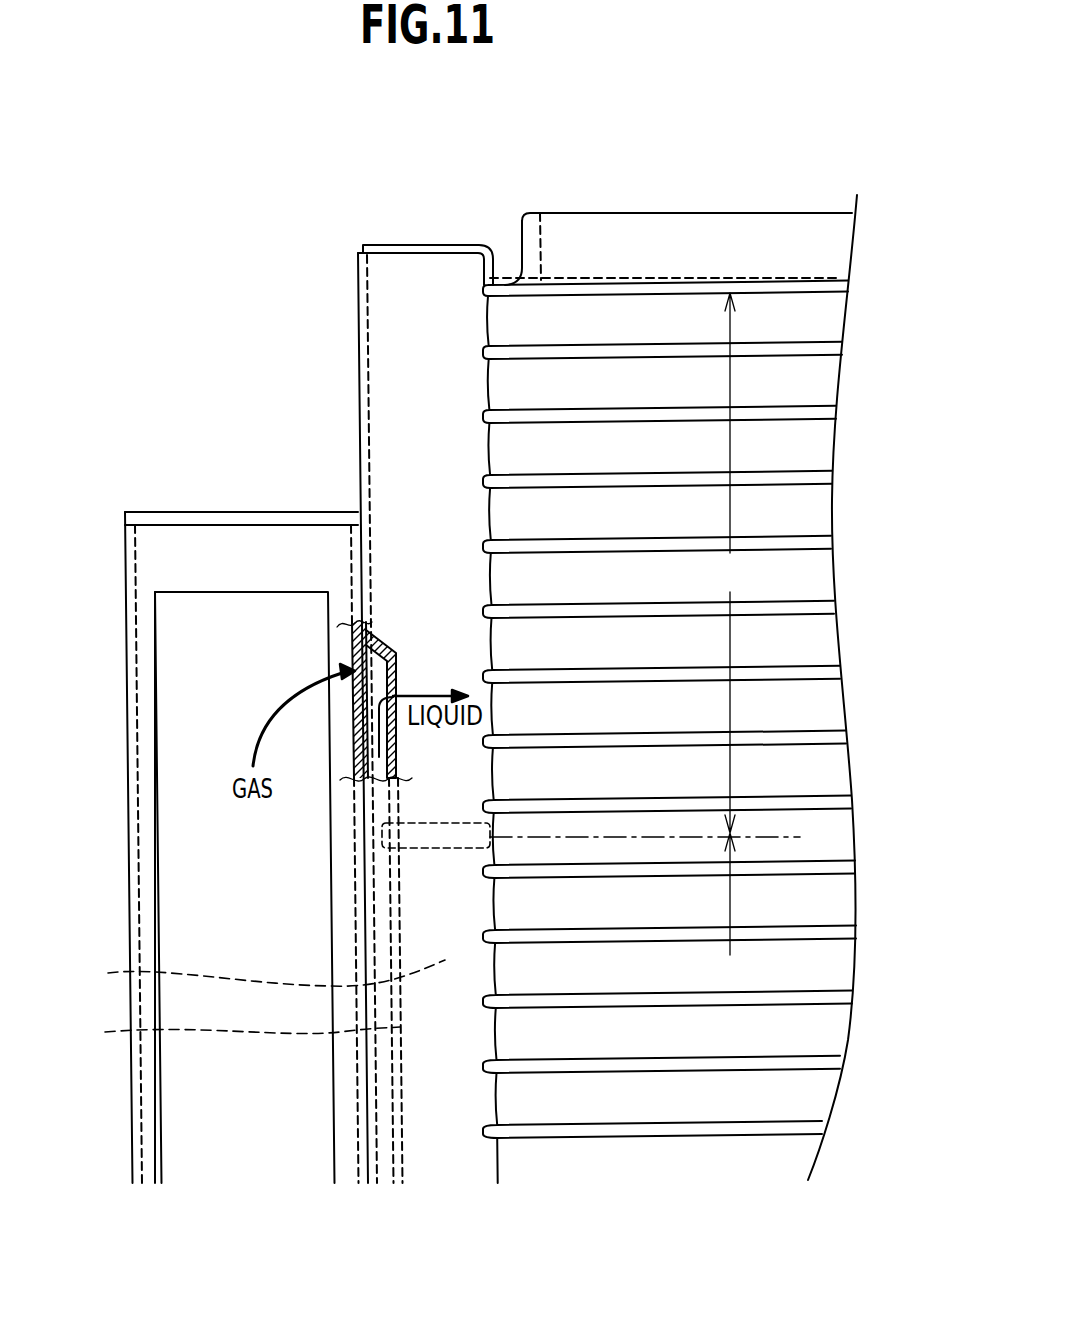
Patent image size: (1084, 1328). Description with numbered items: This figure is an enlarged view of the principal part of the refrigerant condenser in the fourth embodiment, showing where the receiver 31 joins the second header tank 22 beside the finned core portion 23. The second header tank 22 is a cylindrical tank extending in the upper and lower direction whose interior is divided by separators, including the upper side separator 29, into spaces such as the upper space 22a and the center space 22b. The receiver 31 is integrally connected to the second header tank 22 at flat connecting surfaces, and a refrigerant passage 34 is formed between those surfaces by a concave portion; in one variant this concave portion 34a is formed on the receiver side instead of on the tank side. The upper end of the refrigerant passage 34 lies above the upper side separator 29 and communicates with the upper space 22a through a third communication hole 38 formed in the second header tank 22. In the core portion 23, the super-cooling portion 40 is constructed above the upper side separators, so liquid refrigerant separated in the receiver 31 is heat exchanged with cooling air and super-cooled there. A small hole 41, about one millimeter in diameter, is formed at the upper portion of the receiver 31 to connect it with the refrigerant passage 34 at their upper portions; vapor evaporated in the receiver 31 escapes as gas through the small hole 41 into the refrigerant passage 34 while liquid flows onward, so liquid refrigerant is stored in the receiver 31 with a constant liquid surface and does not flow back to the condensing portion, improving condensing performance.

The second header tank 22 is at (358, 288).
The upper space of the second header tank 22a is at (412, 327).
The center space of the second header tank 22b is at (246, 975).
The core portion 23 is at (622, 438).
The upper side separator 29 is at (445, 848).
The receiver 31 is at (127, 703).
The refrigerant passage 34 is at (231, 1032).
The concave portion 34a is at (210, 512).
The third communication hole 38 is at (393, 685).
The super-cooling portion 40 is at (730, 624).
The small hole 41 is at (352, 667).